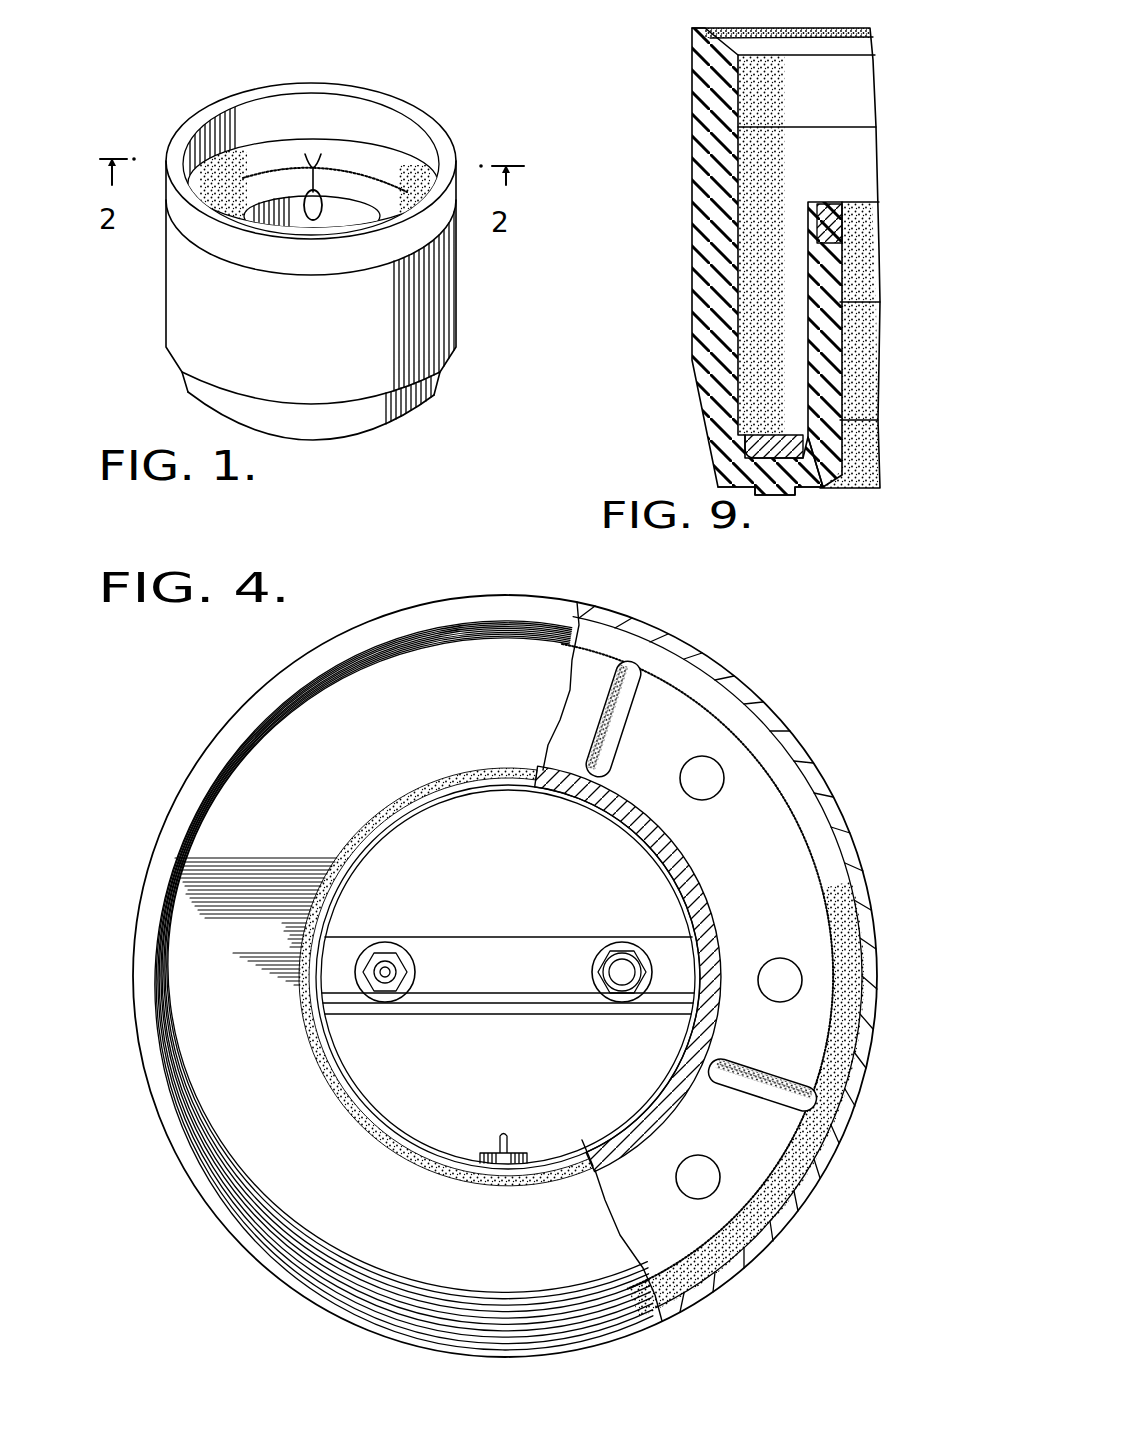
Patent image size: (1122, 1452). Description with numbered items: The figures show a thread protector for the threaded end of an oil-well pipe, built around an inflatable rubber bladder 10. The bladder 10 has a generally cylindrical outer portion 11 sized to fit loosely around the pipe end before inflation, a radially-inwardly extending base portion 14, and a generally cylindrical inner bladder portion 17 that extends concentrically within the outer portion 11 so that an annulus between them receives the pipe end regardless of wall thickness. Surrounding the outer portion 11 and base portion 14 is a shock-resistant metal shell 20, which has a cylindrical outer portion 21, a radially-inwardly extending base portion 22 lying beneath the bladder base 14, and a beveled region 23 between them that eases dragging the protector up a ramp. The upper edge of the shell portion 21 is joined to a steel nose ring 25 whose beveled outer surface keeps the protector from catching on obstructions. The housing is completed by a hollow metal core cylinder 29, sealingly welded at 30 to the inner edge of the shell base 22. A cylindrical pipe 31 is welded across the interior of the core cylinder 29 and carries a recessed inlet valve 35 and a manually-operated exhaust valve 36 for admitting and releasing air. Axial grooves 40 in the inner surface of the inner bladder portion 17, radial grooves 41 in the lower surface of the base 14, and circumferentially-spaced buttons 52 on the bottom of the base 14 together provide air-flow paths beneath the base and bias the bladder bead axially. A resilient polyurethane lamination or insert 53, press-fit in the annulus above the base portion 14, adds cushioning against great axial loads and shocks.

In FIG. 1, the rubber bladder 10 is at (352, 148).
In FIG. 9, the rubber bladder 10 is at (676, 227).
In FIG. 4, the rubber bladder 10 is at (813, 804).
In FIG. 9, the outer portion 11 is at (698, 320).
In FIG. 9, the base portion 14 is at (733, 475).
In FIG. 4, the base portion 14 is at (773, 1152).
In FIG. 9, the inner bladder portion 17 is at (831, 379).
In FIG. 1, the metal shell 20 is at (160, 327).
In FIG. 4, the metal shell 20 is at (740, 665).
In FIG. 1, the outer portion of shell 21 is at (453, 307).
In FIG. 4, the outer portion of shell 21 is at (868, 913).
In FIG. 4, the base portion of shell 22 is at (305, 723).
In FIG. 1, the beveled region 23 is at (420, 393).
In FIG. 4, the beveled region 23 is at (448, 610).
In FIG. 1, the nose ring 25 is at (453, 175).
In FIG. 4, the inner or core portion 29 is at (645, 845).
In FIG. 4, the weld 30 is at (337, 1078).
In FIG. 4, the cylindrical pipe 31 is at (482, 945).
In FIG. 4, the inlet valve 35 is at (385, 958).
In FIG. 4, the exhaust valve 36 is at (617, 955).
In FIG. 4, the grooves 40 is at (587, 768).
In FIG. 4, the radial grooves 41 is at (617, 723).
In FIG. 4, the cylinders or buttons 52 is at (690, 770).
In FIG. 9, the lamination or insert 53 is at (742, 435).